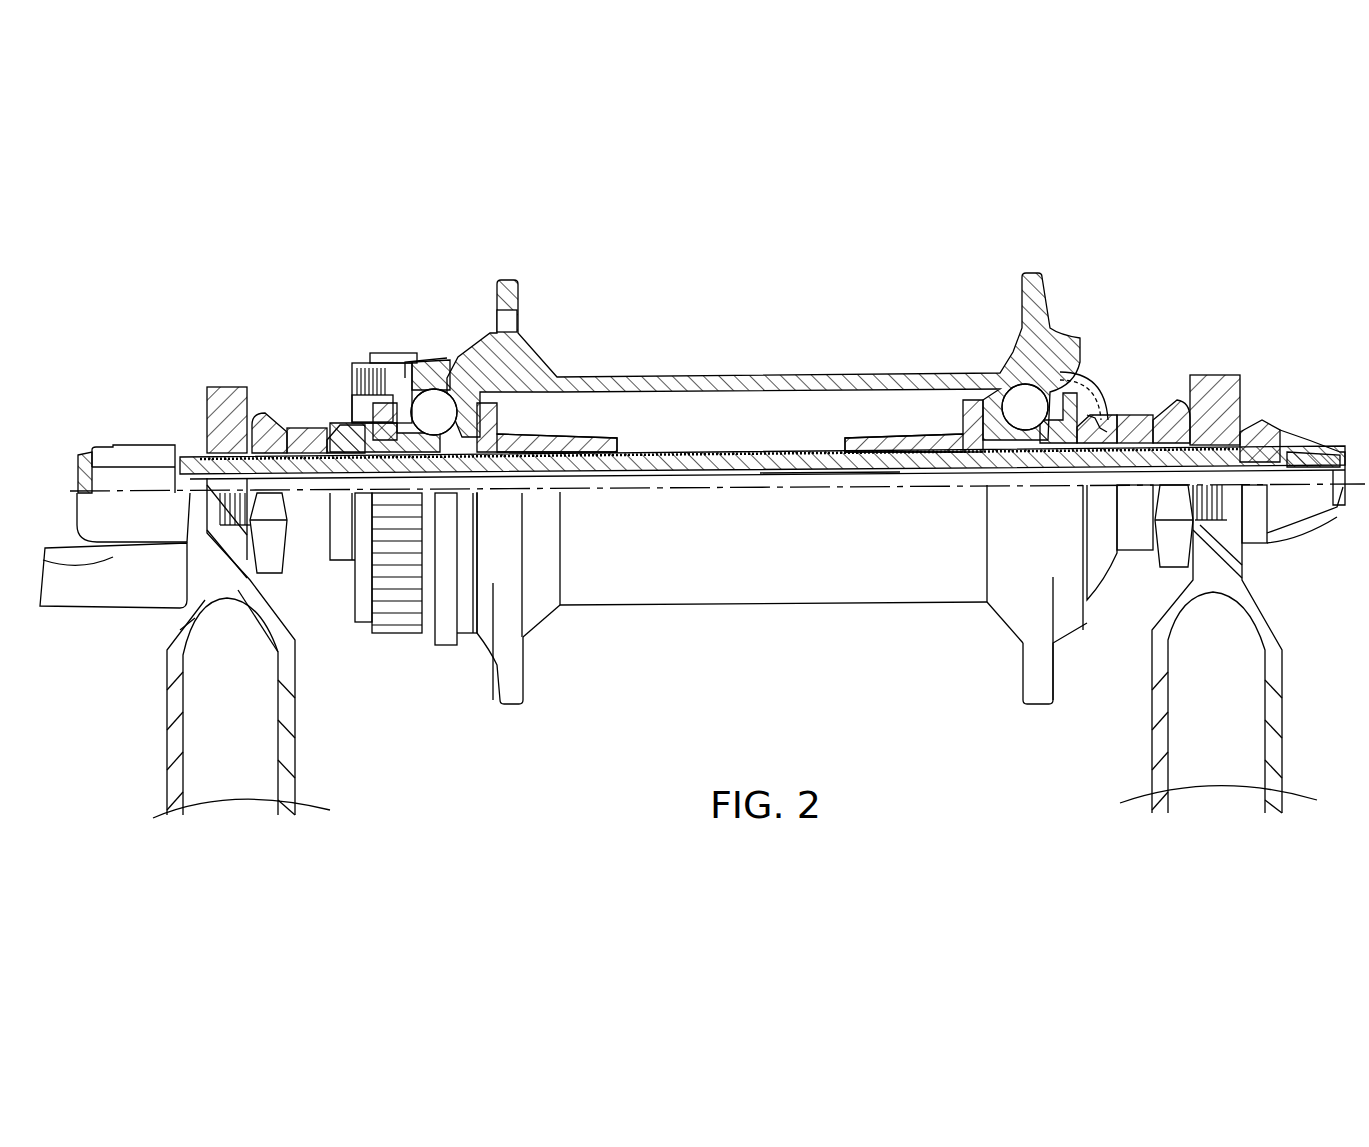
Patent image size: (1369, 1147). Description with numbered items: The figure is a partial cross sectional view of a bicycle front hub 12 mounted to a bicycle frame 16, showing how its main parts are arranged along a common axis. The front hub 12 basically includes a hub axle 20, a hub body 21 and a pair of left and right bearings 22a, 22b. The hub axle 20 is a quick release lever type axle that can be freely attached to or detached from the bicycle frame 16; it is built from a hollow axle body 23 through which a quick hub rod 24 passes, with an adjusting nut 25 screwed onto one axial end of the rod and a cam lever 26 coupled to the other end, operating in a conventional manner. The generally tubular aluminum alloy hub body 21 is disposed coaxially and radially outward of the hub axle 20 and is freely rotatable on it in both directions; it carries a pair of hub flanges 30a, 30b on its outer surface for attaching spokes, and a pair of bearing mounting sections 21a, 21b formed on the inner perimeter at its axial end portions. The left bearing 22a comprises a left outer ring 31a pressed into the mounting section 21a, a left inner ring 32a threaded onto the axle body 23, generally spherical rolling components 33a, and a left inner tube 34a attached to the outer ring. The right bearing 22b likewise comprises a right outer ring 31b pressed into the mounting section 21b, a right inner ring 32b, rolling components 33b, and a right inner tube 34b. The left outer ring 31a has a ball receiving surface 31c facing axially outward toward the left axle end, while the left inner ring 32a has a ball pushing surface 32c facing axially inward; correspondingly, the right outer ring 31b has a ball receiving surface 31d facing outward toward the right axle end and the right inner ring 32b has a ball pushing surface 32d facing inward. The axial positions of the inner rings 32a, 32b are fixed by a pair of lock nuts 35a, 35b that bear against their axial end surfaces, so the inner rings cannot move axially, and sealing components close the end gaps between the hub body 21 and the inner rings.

The front hub 12 is at (782, 456).
The bicycle frame 16 is at (302, 737).
The hub axle 20 is at (708, 446).
The hub body 21 is at (661, 370).
The bearing mounting section 21a is at (537, 374).
The bearing mounting section 21b is at (1052, 331).
The left bearing 22a is at (555, 397).
The right bearing 22b is at (914, 394).
The axle body 23 is at (733, 452).
The quick hub rod 24 is at (822, 473).
The adjusting nut 25 is at (1282, 427).
The cam lever 26 is at (98, 614).
The hub flange 30a is at (495, 293).
The hub flange 30b is at (1045, 281).
The left outer ring 31a is at (450, 385).
The right outer ring 31b is at (1008, 393).
The ball receiving surface 31c is at (452, 477).
The ball receiving surface 31d is at (1012, 420).
The left inner ring 32a is at (330, 427).
The right inner ring 32b is at (1105, 415).
The ball pushing surface 32c is at (474, 470).
The ball pushing surface 32d is at (1022, 432).
The rolling component 33a is at (457, 370).
The rolling component 33b is at (1020, 352).
The left inner tube 34a is at (607, 428).
The right inner tube 34b is at (868, 424).
The lock nut 35a is at (265, 412).
The lock nut 35b is at (1178, 400).